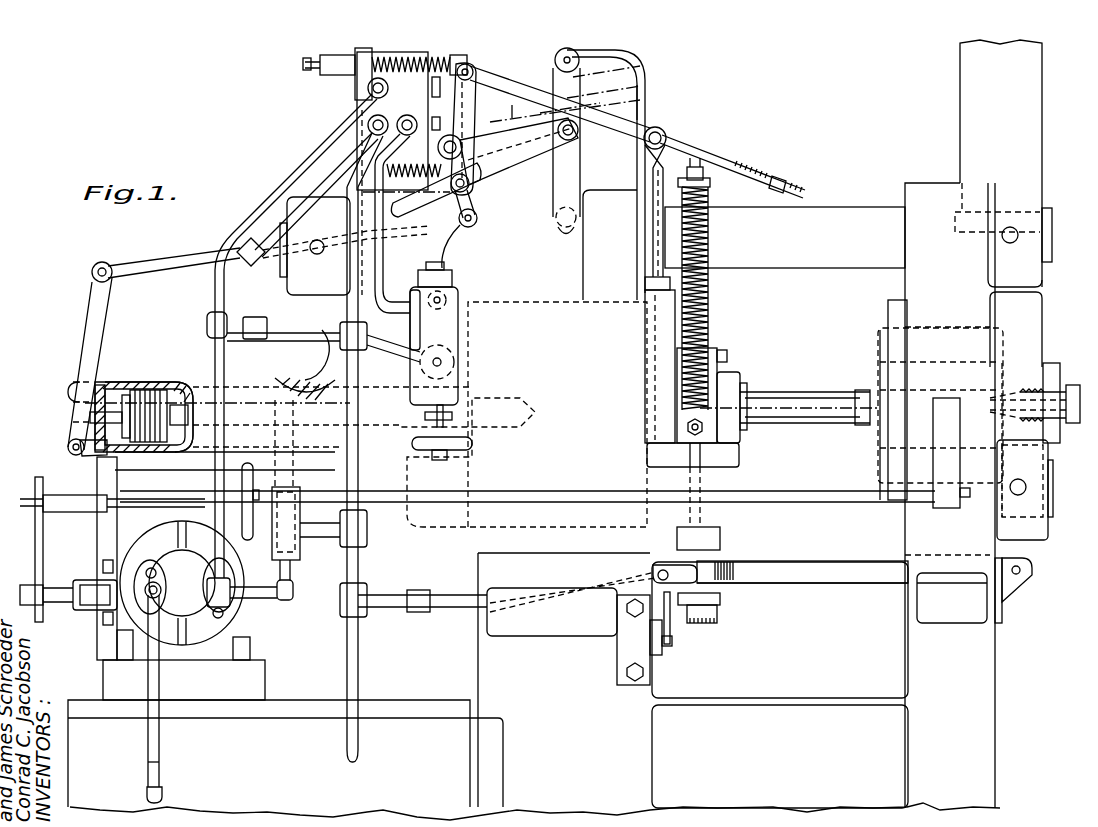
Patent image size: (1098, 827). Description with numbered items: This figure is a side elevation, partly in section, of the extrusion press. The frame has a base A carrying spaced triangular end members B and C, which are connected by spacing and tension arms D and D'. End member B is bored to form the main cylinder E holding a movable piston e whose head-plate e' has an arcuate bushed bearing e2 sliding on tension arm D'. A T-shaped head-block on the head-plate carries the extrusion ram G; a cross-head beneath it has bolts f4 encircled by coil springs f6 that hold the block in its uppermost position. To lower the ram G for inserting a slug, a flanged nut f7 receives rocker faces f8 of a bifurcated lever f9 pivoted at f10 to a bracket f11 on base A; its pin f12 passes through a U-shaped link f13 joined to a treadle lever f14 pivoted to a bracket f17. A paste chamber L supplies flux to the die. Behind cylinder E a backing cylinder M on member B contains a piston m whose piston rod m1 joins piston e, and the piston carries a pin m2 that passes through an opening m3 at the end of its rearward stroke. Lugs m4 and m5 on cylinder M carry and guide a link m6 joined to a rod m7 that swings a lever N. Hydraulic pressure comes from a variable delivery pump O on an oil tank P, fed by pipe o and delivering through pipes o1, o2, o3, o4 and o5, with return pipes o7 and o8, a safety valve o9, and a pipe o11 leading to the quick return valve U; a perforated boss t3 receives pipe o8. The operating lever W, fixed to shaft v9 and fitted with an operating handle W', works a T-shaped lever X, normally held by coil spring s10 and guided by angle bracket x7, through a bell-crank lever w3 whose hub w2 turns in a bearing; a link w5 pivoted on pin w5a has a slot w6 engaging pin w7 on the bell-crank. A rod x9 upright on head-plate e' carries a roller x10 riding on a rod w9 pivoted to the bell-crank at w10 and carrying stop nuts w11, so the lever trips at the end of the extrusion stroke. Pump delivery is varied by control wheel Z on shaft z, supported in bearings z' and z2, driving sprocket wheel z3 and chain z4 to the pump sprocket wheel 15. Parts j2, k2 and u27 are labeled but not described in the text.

The base A is at (534, 573).
The end member B is at (590, 196).
The end member C is at (914, 192).
The spacing and tension arm D is at (785, 237).
The spacing and tension arm D' is at (1038, 490).
The main cylinder E is at (549, 341).
The extrusion ram G is at (806, 396).
The paste chamber L is at (1003, 278).
The backing cylinder M is at (155, 385).
The lever N is at (479, 214).
The variable delivery liquid pressure pump O is at (184, 610).
The oil tank P is at (131, 692).
The quick return valve U is at (458, 341).
The operating lever W is at (519, 155).
The operating handle W' is at (572, 161).
The T-shaped lever X is at (512, 120).
The control wheel Z is at (243, 521).
The piston e is at (523, 414).
The head-plate e' is at (660, 360).
The arcuate bushed bearing portion e2 is at (740, 445).
The bolt f4 is at (720, 522).
The coil spring f6 is at (708, 300).
The flanged nut f7 is at (718, 622).
The rocker face f8 is at (720, 603).
The bifurcated lever f9 is at (793, 570).
The pivot f10 is at (1024, 570).
The bracket f11 is at (1003, 600).
The pin f12 is at (650, 565).
The U-shaped link f13 is at (672, 630).
The treadle lever f14 is at (662, 645).
The bracket f17 is at (552, 630).
The block j2 is at (1050, 365).
The screw head k2 is at (1072, 385).
The piston m is at (138, 382).
The piston rod m1 is at (188, 392).
The axially-extending pin m2 is at (115, 462).
The opening m3 is at (103, 385).
The bifurcated lug m4 is at (70, 452).
The bifurcated lug m5 is at (66, 392).
The link m6 is at (82, 318).
The rod m7 is at (176, 262).
The pipe o is at (148, 762).
The pipe o1 is at (213, 473).
The pipe o2 is at (321, 176).
The pipe o3 is at (272, 181).
The pipe o4 is at (278, 330).
The pipe o5 is at (286, 341).
The pipe o7 is at (392, 348).
The pipe o8 is at (345, 269).
The safety valve o9 is at (298, 543).
The pipe o11 is at (385, 248).
The coil spring s10 is at (420, 58).
The perforated boss t3 is at (407, 115).
The hand wheel u27 is at (462, 470).
The shaft v9 is at (555, 60).
The hub w2 is at (438, 148).
The bell-crank lever w3 is at (476, 129).
The link w5 is at (520, 149).
The pin w5a is at (578, 136).
The elongated slot w6 is at (432, 200).
The pin w7 is at (476, 213).
The rod w9 is at (737, 166).
The pivotal connection w10 is at (475, 69).
The nuts w11 is at (790, 181).
The angle bracket x7 is at (647, 99).
The rod x9 is at (653, 252).
The roller x10 is at (666, 132).
The shaft z is at (527, 484).
The bearing z' is at (940, 406).
The bearing z2 is at (73, 628).
The sprocket wheel z3 is at (35, 512).
The sprocket chain z4 is at (36, 553).
The sprocket wheel 15 is at (30, 600).